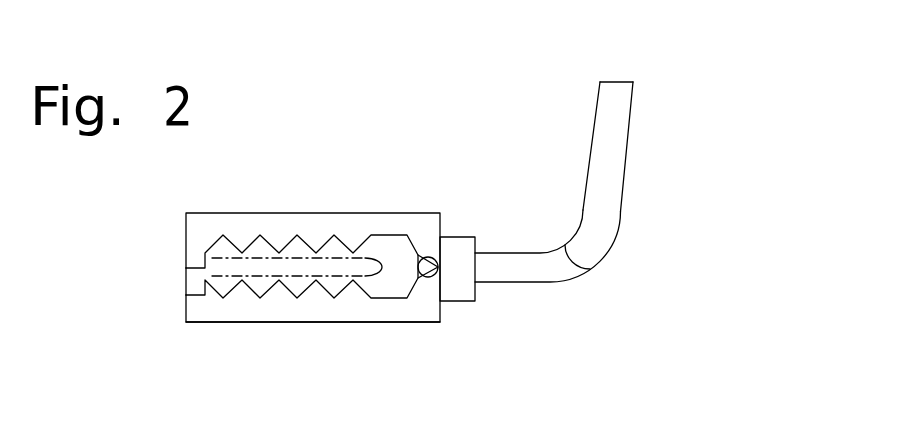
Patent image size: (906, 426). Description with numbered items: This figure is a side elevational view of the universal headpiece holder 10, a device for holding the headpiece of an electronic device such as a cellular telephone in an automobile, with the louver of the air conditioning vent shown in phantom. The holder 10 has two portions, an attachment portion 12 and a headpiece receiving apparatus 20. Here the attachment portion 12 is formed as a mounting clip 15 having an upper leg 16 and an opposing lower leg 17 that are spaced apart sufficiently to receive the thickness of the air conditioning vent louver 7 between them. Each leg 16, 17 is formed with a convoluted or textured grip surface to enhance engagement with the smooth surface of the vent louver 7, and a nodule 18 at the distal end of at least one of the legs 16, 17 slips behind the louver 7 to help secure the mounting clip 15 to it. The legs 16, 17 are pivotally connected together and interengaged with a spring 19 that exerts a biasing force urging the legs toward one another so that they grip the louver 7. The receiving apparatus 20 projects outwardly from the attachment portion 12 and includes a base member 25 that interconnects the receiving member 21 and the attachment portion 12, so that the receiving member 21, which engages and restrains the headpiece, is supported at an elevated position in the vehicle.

The holder 10 is at (647, 269).
The attachment portion 12 is at (373, 141).
The upper leg 16 is at (252, 223).
The lower leg 17 is at (266, 318).
The nodule 18 is at (190, 268).
The air conditioning vent louver 7 is at (214, 269).
The spring 19 is at (418, 264).
The mounting clip 15 is at (422, 315).
The base member 25 is at (521, 267).
The receiving member 21 is at (608, 185).
The headpiece receiving apparatus 20 is at (620, 95).